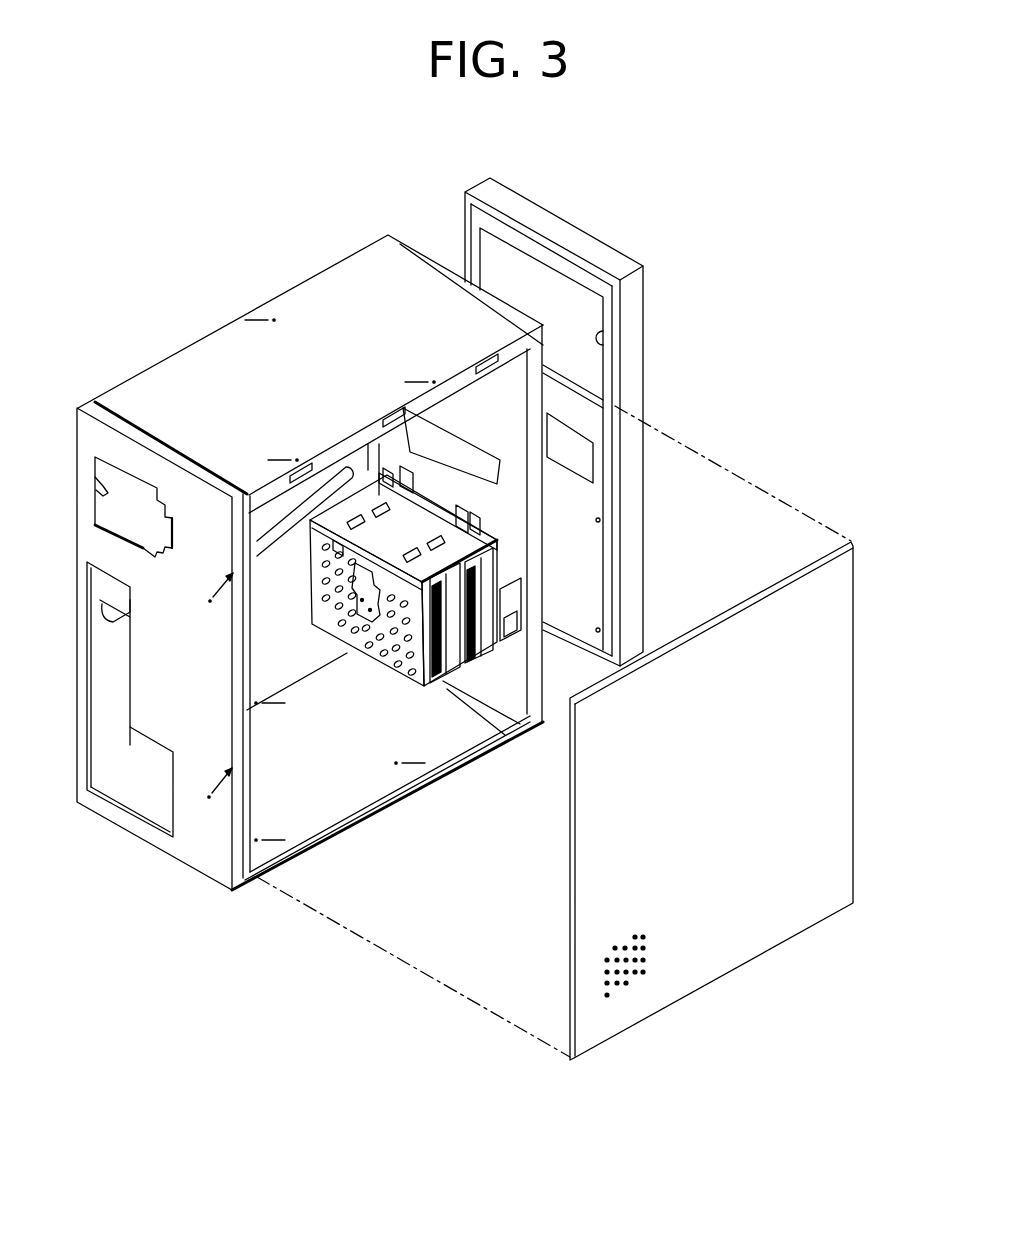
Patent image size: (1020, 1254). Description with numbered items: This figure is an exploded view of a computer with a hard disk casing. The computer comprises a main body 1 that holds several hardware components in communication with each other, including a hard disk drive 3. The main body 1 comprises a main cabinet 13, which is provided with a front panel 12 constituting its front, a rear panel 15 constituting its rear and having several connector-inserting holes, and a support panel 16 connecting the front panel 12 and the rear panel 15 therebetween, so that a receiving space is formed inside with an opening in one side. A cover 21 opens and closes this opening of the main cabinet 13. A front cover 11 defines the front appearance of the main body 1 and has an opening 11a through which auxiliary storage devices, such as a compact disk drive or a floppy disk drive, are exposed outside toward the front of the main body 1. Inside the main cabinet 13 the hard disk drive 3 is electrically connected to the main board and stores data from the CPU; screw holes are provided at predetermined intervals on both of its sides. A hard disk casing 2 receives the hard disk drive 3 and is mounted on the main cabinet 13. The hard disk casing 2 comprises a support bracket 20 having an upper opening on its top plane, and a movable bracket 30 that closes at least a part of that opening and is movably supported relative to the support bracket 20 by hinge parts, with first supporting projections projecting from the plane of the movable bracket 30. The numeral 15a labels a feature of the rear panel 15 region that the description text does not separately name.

The main body 1 is at (404, 550).
The hard disk casing 2 is at (421, 695).
The hard disk drive 3 is at (483, 645).
The front cover 11 is at (609, 422).
The opening 11a is at (602, 346).
The front panel 12 is at (513, 413).
The main cabinet 13 is at (162, 383).
The rear panel 15 is at (159, 665).
The front panel opening 15a is at (150, 812).
The support panel 16 is at (305, 808).
The support bracket 20 is at (509, 622).
The cover 21 is at (848, 652).
The movable bracket 30 is at (423, 527).